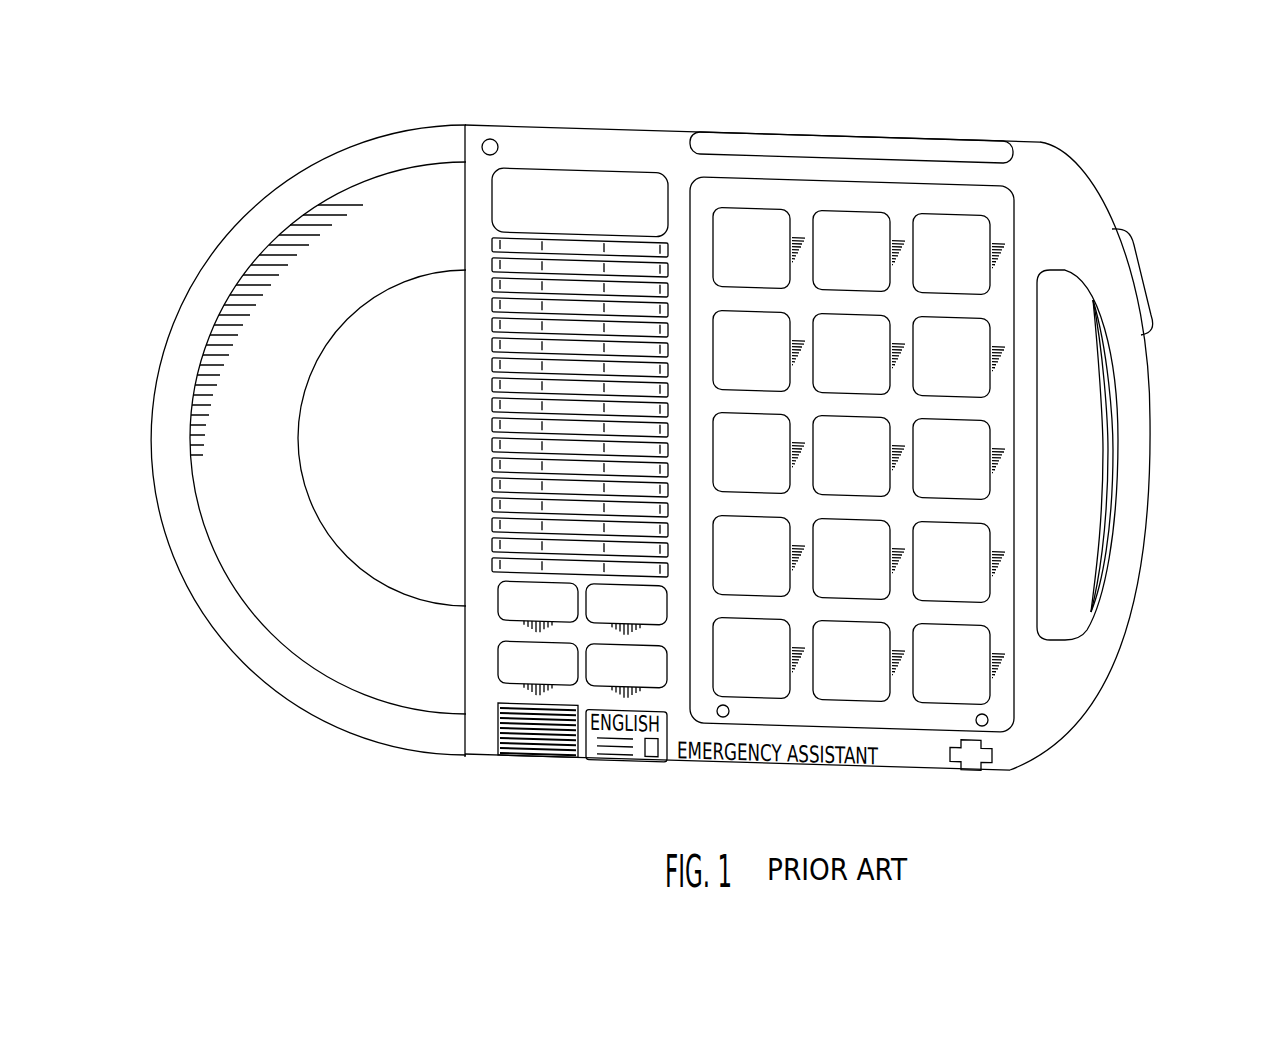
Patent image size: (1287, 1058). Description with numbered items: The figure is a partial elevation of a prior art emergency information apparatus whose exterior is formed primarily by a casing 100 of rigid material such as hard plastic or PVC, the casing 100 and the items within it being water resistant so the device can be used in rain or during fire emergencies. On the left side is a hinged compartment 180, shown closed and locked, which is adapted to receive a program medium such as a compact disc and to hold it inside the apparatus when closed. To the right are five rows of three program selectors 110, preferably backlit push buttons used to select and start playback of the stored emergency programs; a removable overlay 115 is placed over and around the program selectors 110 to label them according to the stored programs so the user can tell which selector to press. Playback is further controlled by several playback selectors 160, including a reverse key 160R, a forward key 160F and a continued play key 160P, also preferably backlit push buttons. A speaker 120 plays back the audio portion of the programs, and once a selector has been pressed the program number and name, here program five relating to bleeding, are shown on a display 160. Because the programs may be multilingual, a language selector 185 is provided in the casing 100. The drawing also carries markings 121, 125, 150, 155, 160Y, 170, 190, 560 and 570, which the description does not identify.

The casing 100 is at (1075, 215).
The program selectors 110 is at (948, 220).
The removable overlay 115 is at (1003, 680).
The speaker 120 is at (550, 325).
The phrase selection slot 121 is at (577, 280).
The indicator hole 125 is at (489, 139).
The low battery indicator 150 is at (719, 706).
The on indicator 155 is at (990, 718).
The playback selectors 160 is at (547, 705).
The yes button 160Y is at (497, 612).
The reverse key 160R is at (508, 673).
The forward key 160F is at (594, 686).
The continued play key 160P is at (668, 610).
The display 170 is at (523, 170).
The hinged compartment 180 is at (312, 625).
The language selector 185 is at (523, 752).
The handle 190 is at (1137, 527).
The top recess 560 is at (990, 147).
The side button 570 is at (1142, 282).